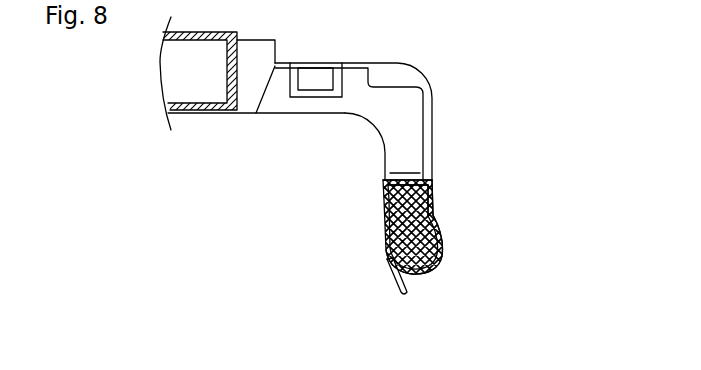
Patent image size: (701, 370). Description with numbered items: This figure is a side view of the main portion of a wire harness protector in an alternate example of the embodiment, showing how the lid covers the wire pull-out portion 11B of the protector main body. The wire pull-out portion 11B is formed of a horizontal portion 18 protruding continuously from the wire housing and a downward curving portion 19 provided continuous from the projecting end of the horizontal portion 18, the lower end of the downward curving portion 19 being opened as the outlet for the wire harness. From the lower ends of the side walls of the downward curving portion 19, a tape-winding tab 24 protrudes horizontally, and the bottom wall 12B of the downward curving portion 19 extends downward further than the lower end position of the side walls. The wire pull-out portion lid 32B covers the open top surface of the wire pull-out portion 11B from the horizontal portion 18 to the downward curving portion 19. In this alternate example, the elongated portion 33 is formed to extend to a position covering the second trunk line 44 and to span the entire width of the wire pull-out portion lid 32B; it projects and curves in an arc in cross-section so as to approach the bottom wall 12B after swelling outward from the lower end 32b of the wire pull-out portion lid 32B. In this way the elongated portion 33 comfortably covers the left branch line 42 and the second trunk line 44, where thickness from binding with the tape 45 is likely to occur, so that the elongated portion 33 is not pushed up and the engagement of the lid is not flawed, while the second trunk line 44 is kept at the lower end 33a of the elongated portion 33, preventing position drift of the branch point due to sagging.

The wire pull-out portion 11B is at (292, 201).
The bottom wall 12B is at (390, 272).
The horizontal portion 18 is at (310, 113).
The downward curving portion 19 is at (383, 149).
The tape-winding tab 24 is at (384, 182).
The wire pull-out portion lid 32B is at (430, 130).
The lower end of the wire pull-out portion lid 32b is at (432, 189).
The elongated portion 33 is at (441, 240).
The lower end of the elongated portion 33a is at (422, 276).
The left branch line 42 is at (437, 212).
The second trunk line 44 is at (443, 262).
The tape 45 is at (418, 173).